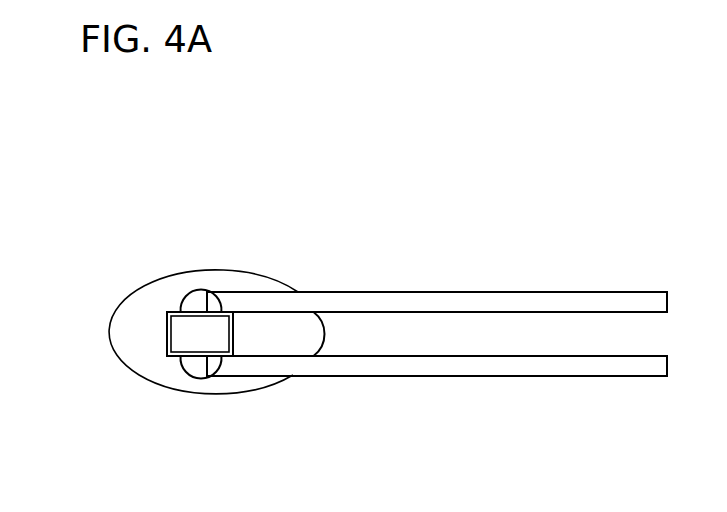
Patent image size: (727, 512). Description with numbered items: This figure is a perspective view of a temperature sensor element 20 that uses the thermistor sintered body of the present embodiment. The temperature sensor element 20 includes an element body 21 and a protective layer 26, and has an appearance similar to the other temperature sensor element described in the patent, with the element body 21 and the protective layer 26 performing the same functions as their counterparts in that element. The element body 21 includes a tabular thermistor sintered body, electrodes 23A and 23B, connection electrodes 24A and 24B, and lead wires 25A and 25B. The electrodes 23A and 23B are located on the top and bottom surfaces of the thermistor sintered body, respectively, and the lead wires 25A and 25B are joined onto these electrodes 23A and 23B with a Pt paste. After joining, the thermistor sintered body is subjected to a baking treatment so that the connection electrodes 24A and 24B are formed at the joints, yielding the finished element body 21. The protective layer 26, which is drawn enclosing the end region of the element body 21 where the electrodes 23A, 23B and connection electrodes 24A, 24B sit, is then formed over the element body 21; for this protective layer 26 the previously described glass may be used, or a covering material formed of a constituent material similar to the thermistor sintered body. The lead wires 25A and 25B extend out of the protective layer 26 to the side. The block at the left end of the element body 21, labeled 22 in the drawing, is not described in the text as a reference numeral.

The temperature sensor element 20 is at (390, 147).
The element body 21 is at (390, 266).
The connector block 22 is at (167, 333).
The electrode 23A is at (175, 311).
The electrode 23B is at (173, 358).
The connection electrode 24A is at (200, 293).
The connection electrode 24B is at (200, 376).
The lead wire 25A is at (513, 291).
The lead wire 25B is at (503, 377).
The protective layer 26 is at (113, 343).